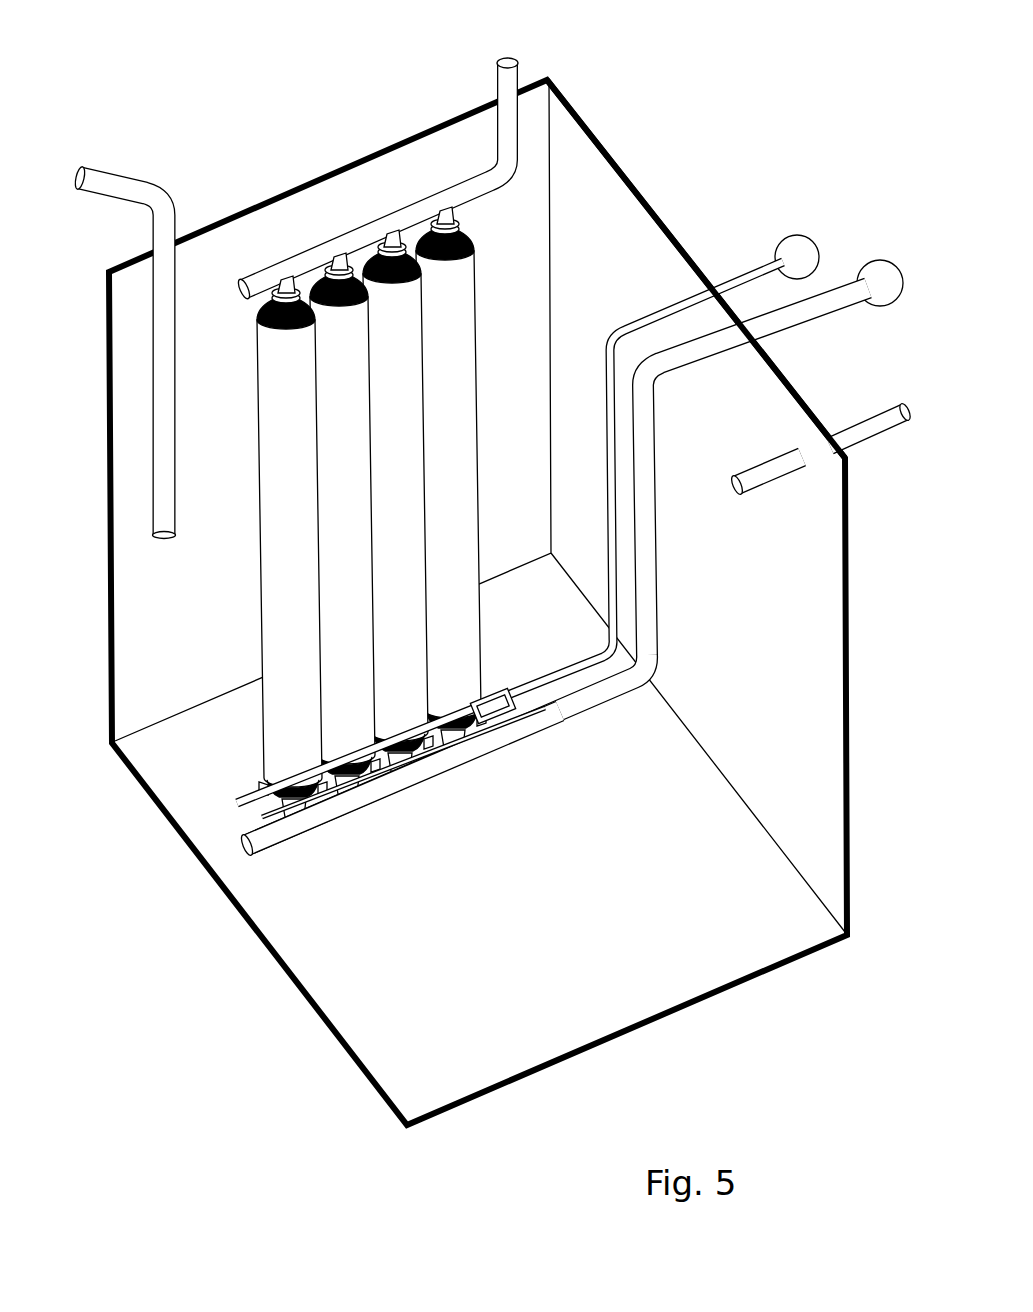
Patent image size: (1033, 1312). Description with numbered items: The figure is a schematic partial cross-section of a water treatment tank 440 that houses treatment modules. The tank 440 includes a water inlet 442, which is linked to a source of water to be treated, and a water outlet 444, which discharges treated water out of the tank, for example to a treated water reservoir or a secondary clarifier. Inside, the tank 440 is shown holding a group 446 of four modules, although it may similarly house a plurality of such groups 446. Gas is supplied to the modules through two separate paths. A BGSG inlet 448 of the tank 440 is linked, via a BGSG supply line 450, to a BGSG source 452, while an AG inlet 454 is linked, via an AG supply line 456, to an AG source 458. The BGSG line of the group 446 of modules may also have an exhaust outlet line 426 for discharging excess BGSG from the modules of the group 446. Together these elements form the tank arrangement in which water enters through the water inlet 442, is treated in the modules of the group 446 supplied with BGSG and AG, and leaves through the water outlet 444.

The water treatment tank 440 is at (398, 112).
The water inlet 442 is at (120, 183).
The exhaust outlet line 426 is at (343, 250).
The group of modules 446 is at (345, 535).
The BGSG inlet 448 is at (460, 745).
The BGSG supply line 450 is at (660, 555).
The BGSG source 452 is at (873, 258).
The AG inlet 454 is at (503, 693).
The AG supply line 456 is at (640, 307).
The AG source 458 is at (793, 242).
The water outlet 444 is at (772, 485).